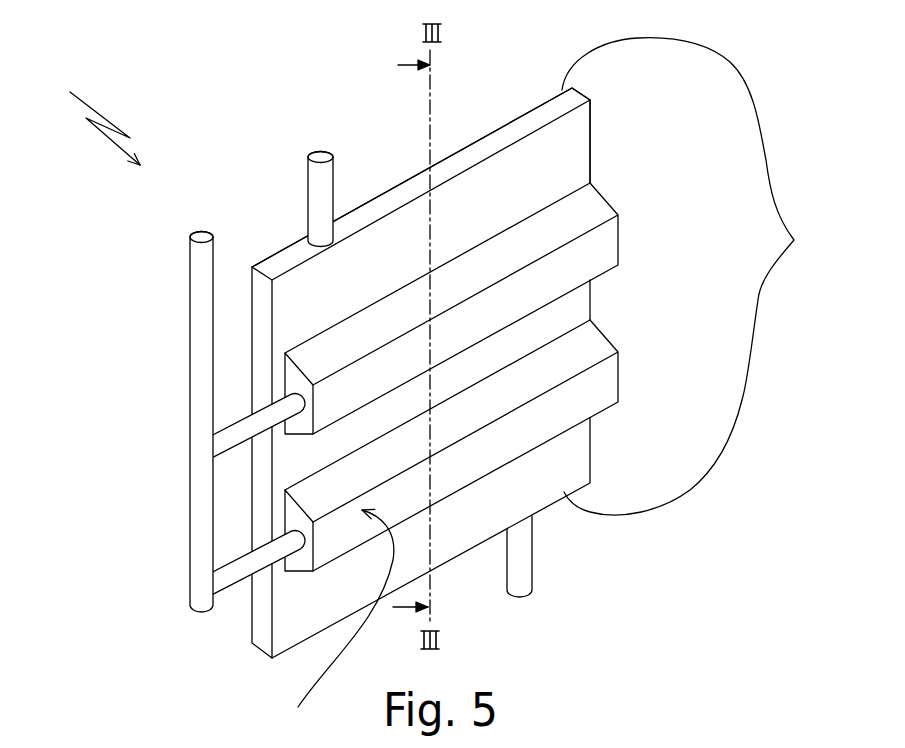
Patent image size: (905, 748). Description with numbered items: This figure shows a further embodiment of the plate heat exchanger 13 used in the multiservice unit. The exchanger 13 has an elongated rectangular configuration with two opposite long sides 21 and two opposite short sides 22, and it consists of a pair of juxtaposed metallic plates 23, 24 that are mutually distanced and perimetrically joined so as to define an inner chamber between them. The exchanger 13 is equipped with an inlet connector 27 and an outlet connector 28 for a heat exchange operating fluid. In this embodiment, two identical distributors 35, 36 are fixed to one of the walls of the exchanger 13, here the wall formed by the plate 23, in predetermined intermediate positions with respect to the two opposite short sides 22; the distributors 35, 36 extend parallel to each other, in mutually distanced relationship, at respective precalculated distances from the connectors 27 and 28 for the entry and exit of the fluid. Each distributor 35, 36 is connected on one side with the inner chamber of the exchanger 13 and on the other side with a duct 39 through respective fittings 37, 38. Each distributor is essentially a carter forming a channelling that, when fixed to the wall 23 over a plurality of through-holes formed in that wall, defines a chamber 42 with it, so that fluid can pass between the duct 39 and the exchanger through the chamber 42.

The heat exchanger 13 is at (85, 119).
The long side 21 is at (372, 212).
The short side 22 is at (699, 276).
The metallic plate 23 is at (572, 144).
The metallic plate 24 is at (560, 100).
The inlet connector 27 is at (308, 184).
The outlet connector 28 is at (532, 555).
The distributor 35 is at (618, 235).
The distributor 36 is at (618, 370).
The fitting 37 is at (234, 456).
The fitting 38 is at (240, 587).
The duct 39 is at (190, 333).
The chamber 42 is at (341, 624).